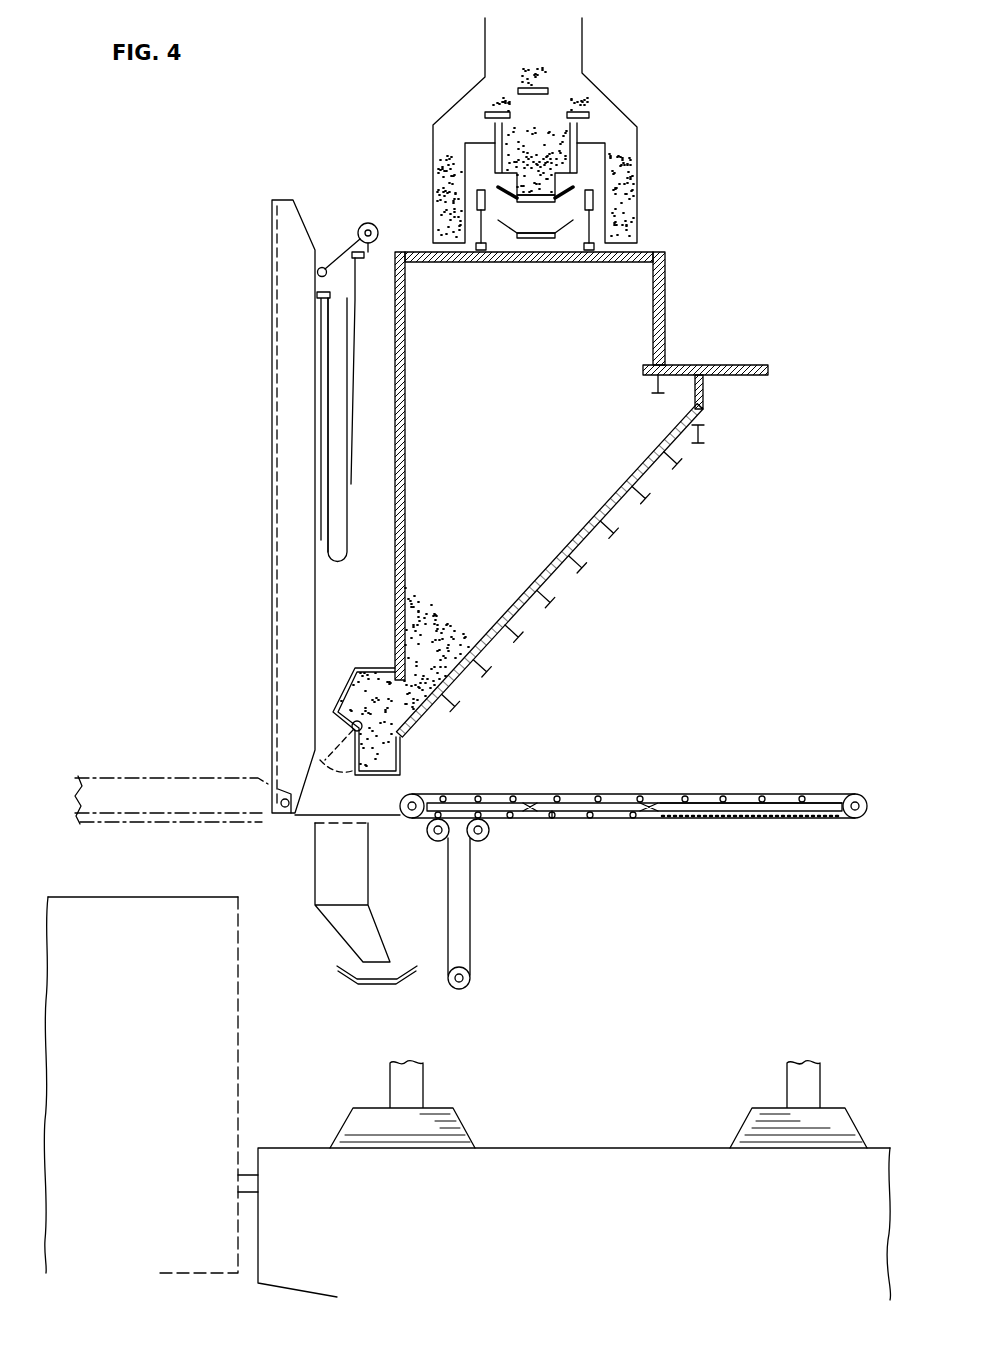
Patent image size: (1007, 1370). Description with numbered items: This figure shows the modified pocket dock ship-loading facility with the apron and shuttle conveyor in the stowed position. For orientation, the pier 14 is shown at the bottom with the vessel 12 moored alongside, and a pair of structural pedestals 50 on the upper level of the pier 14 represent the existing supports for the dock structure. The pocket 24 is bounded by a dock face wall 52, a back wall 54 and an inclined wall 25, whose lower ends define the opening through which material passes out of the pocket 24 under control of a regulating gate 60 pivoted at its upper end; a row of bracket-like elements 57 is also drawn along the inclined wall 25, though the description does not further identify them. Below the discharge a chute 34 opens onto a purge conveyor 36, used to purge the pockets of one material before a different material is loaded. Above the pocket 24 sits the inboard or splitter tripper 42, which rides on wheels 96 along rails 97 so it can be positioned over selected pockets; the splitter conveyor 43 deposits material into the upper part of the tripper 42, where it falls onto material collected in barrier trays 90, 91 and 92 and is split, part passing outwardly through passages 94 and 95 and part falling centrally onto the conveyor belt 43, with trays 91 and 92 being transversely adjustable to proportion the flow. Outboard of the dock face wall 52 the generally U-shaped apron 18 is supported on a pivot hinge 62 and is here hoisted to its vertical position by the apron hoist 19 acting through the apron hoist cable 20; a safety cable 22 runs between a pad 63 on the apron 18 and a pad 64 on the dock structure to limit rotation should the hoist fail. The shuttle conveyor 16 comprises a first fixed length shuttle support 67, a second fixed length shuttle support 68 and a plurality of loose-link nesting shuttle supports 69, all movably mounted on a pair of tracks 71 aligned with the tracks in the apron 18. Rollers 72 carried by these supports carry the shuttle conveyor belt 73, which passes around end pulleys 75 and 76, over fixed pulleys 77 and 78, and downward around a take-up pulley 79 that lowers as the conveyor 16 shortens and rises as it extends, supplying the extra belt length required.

The vessel 12 is at (113, 1158).
The pier 14 is at (434, 1241).
The shuttle conveyor 16 is at (603, 789).
The apron 18 is at (284, 373).
The apron hoist 19 is at (379, 235).
The apron hoist cable 20 is at (323, 268).
The safety cable 22 is at (353, 484).
The pocket 24 is at (592, 445).
The inclined wall 25 is at (567, 560).
The chute 34 is at (332, 919).
The purge conveyor 36 is at (397, 975).
The inboard tripper 42 is at (622, 122).
The splitter conveyor 43 is at (533, 195).
The structural pedestals 50 is at (456, 1123).
The dock face wall 52 is at (405, 398).
The back wall 54 is at (666, 320).
The support brackets 57 is at (570, 580).
The regulating gate 60 is at (352, 742).
The pivot hinge 62 is at (288, 820).
The pad 63 is at (329, 300).
The pad 64 is at (352, 260).
The first fixed length shuttle support 67 is at (503, 812).
The second fixed length shuttle support 68 is at (600, 810).
The loose-link nesting shuttle supports 69 is at (736, 820).
The tracks 71 is at (556, 816).
The rollers 72 is at (446, 797).
The shuttle conveyor belt 73 is at (786, 797).
The end pulley 75 is at (416, 794).
The end pulley 76 is at (860, 801).
The fixed pulley 77 is at (433, 841).
The fixed pulley 78 is at (478, 842).
The take-up pulley 79 is at (463, 990).
The barrier tray 90 is at (545, 85).
The barrier tray 91 is at (497, 108).
The barrier tray 92 is at (576, 112).
The passage 94 is at (447, 155).
The passage 95 is at (632, 198).
The wheels 96 is at (477, 198).
The rails 97 is at (484, 251).